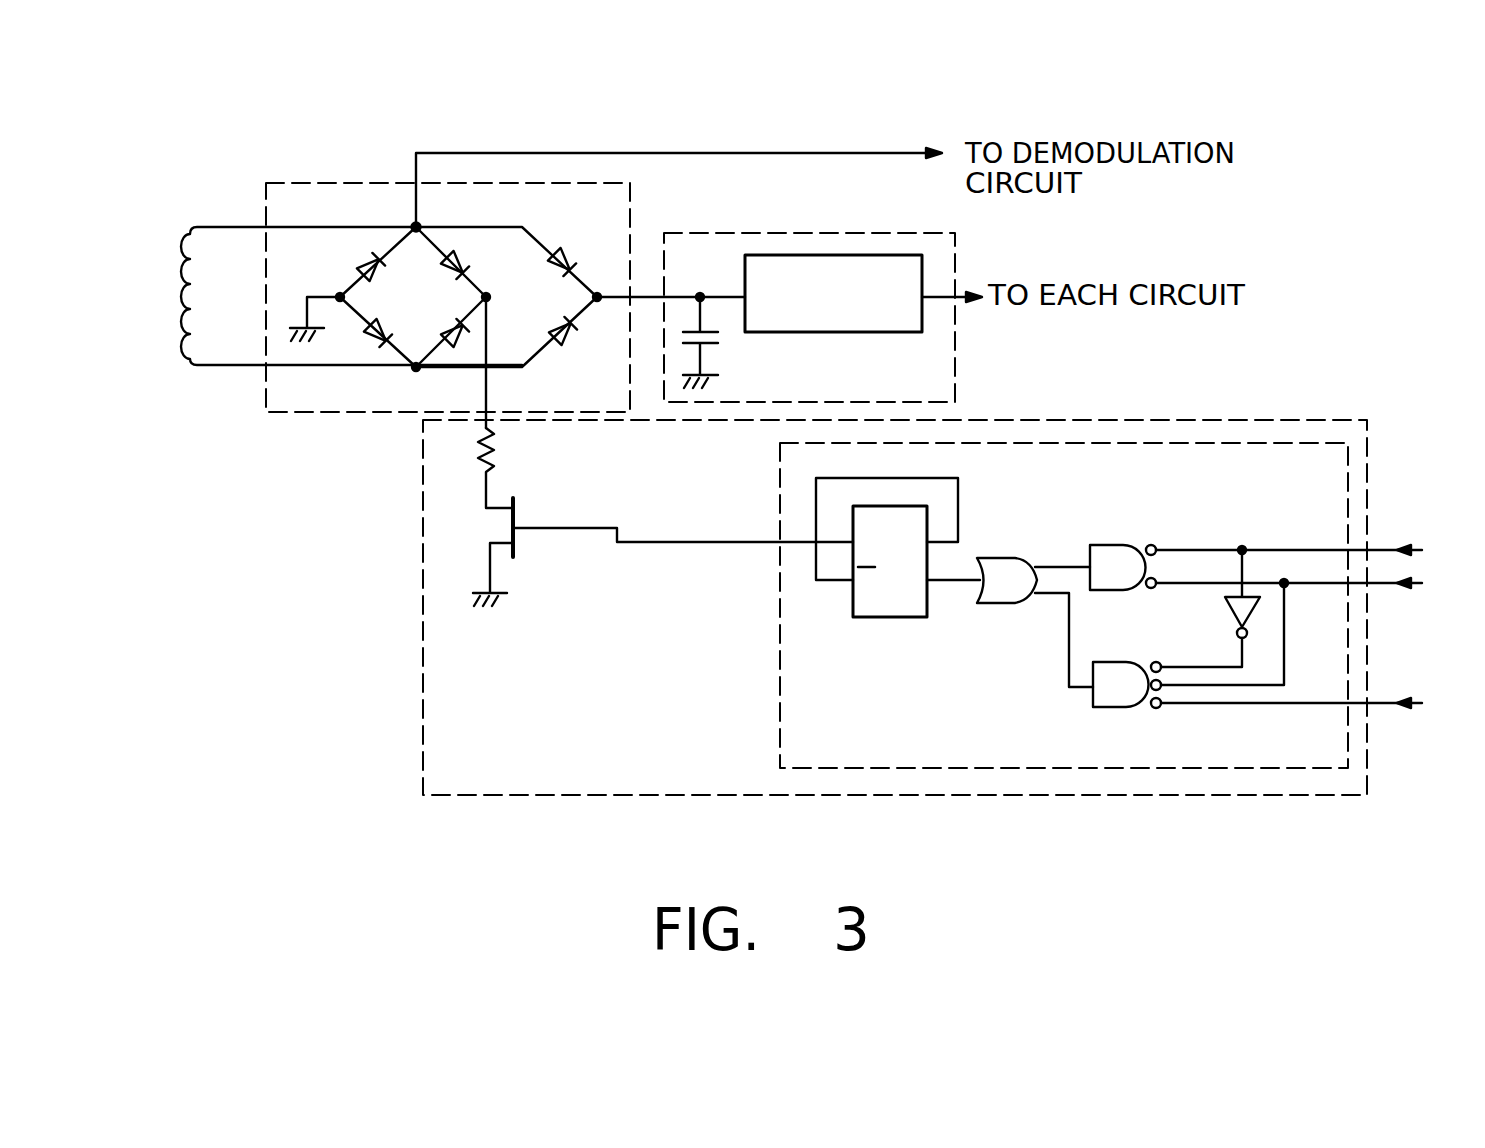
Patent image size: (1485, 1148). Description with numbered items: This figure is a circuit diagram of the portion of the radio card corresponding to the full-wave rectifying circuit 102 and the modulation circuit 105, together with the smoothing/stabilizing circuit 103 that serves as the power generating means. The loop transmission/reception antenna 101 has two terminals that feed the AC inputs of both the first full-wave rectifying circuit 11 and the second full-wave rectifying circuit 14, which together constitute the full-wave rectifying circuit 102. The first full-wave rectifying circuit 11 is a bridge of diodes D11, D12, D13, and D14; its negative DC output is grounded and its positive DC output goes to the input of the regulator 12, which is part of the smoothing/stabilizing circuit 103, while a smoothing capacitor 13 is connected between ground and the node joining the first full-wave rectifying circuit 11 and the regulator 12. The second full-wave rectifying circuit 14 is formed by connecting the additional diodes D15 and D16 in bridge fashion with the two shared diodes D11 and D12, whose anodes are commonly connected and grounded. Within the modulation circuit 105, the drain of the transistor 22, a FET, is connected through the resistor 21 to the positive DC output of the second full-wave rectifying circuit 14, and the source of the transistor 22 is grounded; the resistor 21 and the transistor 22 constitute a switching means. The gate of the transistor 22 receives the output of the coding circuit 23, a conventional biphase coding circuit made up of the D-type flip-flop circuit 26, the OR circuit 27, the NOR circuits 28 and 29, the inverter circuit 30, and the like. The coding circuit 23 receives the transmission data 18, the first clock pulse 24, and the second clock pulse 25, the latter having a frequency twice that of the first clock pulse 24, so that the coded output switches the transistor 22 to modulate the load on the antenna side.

The loop transmission/reception antenna 101 is at (180, 258).
The full-wave rectifying circuit 102 is at (298, 181).
The smoothing/stabilizing circuit 103 is at (829, 233).
The modulation circuit 105 is at (422, 722).
The first full-wave rectifying circuit 11 is at (521, 237).
The regulator 12 is at (853, 332).
The smoothing capacitor 13 is at (720, 338).
The second full-wave rectifying circuit 14 is at (396, 258).
The resistor 21 is at (495, 457).
The transistor 22 is at (520, 540).
The coding circuit 23 is at (780, 652).
The first clock pulse 24 is at (1387, 548).
The second clock pulse 25 is at (1390, 584).
The D-type flip-flop circuit 26 is at (888, 618).
The OR circuit 27 is at (1011, 567).
The NOR circuit 28 is at (1108, 560).
The NOR circuit 29 is at (1105, 698).
The inverter circuit 30 is at (1228, 618).
The transmission data 18 is at (1400, 698).
The diode D11 is at (357, 266).
The diode D12 is at (365, 340).
The diode D13 is at (562, 250).
The diode D14 is at (566, 341).
The diode D15 is at (460, 256).
The diode D16 is at (448, 343).